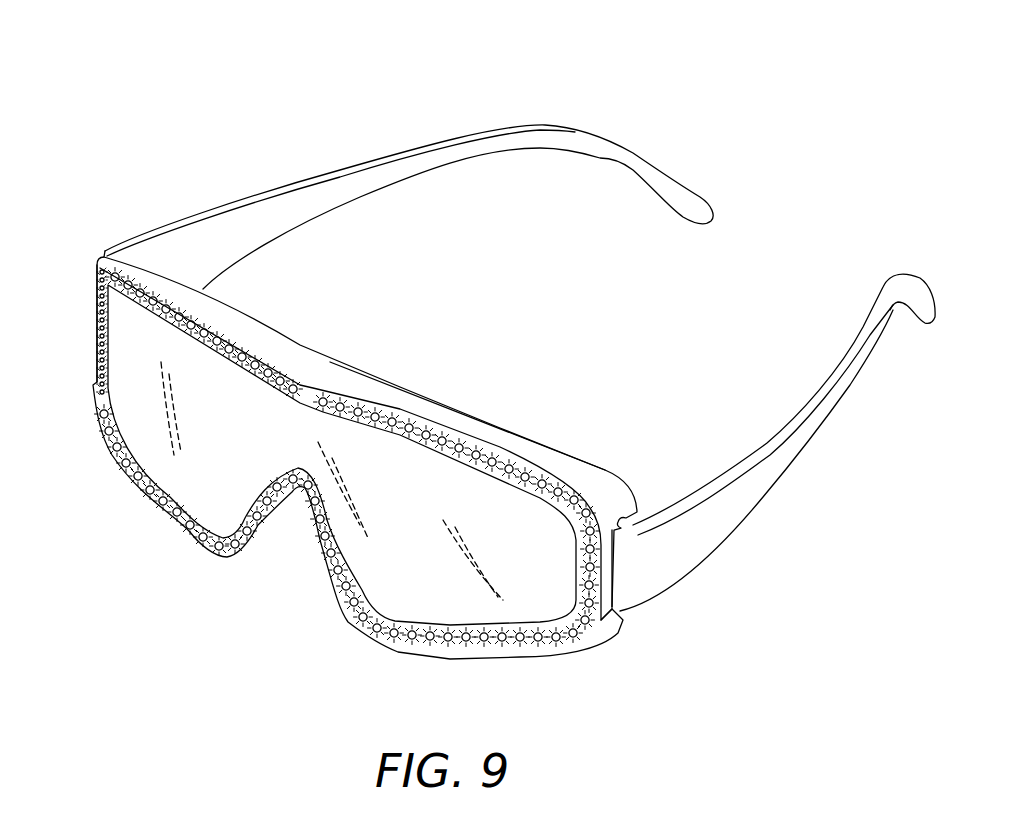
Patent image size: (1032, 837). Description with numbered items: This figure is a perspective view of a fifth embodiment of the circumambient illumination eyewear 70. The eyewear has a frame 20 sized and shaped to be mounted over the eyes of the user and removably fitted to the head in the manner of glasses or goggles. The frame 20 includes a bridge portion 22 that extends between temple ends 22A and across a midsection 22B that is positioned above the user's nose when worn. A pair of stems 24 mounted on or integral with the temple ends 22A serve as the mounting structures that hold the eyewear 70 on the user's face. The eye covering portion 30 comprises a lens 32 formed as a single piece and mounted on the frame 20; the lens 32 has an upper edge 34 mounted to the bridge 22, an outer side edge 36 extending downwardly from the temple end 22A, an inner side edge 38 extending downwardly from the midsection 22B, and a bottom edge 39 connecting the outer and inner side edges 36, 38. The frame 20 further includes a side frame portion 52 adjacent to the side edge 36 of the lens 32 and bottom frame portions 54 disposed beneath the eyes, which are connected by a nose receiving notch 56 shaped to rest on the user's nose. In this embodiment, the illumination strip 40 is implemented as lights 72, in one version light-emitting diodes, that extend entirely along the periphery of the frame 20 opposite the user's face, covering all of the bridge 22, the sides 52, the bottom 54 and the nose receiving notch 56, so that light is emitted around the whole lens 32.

The circumambient illumination eyewear 70 is at (85, 76).
The frame 20 is at (160, 148).
The bridge portion 22 is at (157, 271).
The temple ends 22A is at (110, 250).
The midsection 22B is at (310, 364).
The stems 24 is at (800, 403).
The eye covering portion 30 is at (250, 630).
The lens 32 is at (153, 473).
The upper edge 34 is at (197, 390).
The outer side edge 36 is at (137, 398).
The inner side edge 38 is at (233, 480).
The bottom edge 39 is at (210, 513).
The illumination strip 40 is at (132, 467).
The side frame portion 52 is at (97, 347).
The bottom frame portion 54 is at (172, 527).
The nose receiving notch 56 is at (300, 493).
The lights 72 is at (340, 543).